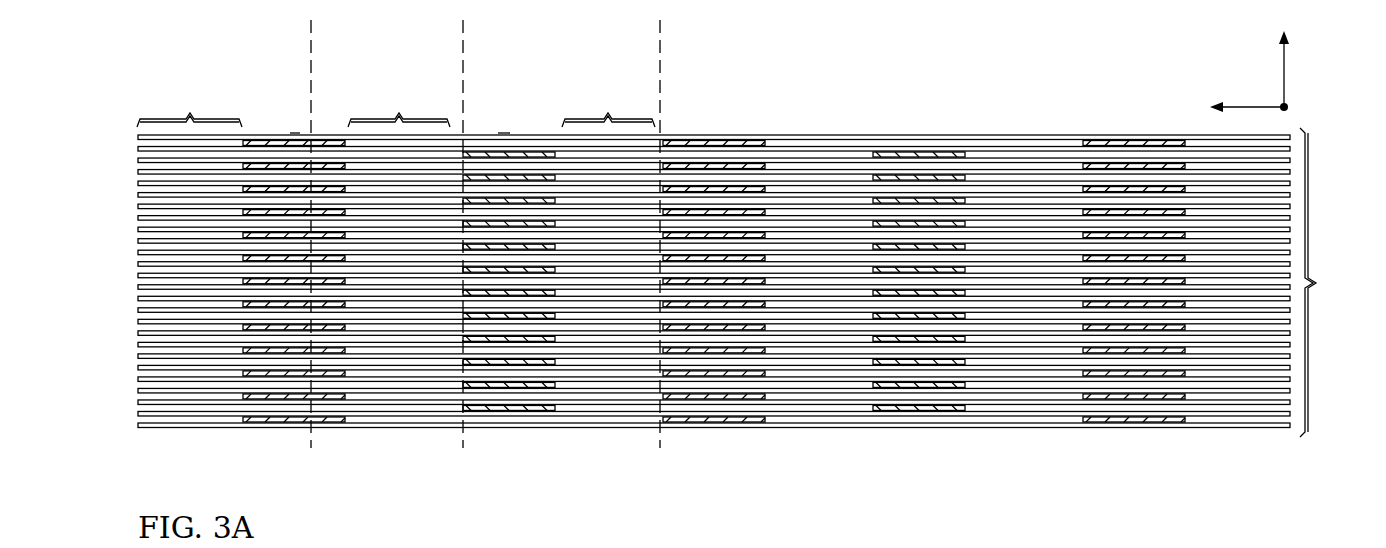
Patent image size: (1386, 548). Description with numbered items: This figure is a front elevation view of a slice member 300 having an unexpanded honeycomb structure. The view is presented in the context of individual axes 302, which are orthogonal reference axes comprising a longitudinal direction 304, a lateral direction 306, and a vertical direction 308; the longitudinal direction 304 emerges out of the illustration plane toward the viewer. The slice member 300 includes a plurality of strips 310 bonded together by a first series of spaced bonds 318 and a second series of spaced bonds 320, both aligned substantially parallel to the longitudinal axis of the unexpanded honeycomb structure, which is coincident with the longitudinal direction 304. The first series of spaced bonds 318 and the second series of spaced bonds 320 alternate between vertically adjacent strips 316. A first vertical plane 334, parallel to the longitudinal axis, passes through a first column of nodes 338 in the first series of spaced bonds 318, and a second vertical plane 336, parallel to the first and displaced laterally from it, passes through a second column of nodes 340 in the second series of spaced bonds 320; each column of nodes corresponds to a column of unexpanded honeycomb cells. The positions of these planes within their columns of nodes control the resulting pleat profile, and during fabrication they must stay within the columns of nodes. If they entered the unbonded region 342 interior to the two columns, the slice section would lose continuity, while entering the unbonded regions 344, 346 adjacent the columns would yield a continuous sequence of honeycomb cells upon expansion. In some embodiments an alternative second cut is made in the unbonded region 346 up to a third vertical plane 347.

The slice member 300 is at (925, 89).
The individual axes 302 is at (1186, 70).
The longitudinal direction 304 is at (1290, 108).
The lateral direction 306 is at (1248, 105).
The vertical direction 308 is at (1286, 70).
The plurality of strips 310 is at (1329, 282).
The vertically adjacent strips 316 is at (995, 135).
The first series of spaced bonds 318 is at (243, 455).
The second series of spaced bonds 320 is at (463, 455).
The first vertical plane 334 is at (310, 52).
The second vertical plane 336 is at (463, 50).
The first column of nodes 338 is at (292, 124).
The second column of nodes 340 is at (508, 122).
The unbonded region 342 is at (399, 105).
The unbonded region 344 is at (189, 105).
The unbonded region 346 is at (608, 105).
The third vertical plane 347 is at (660, 50).